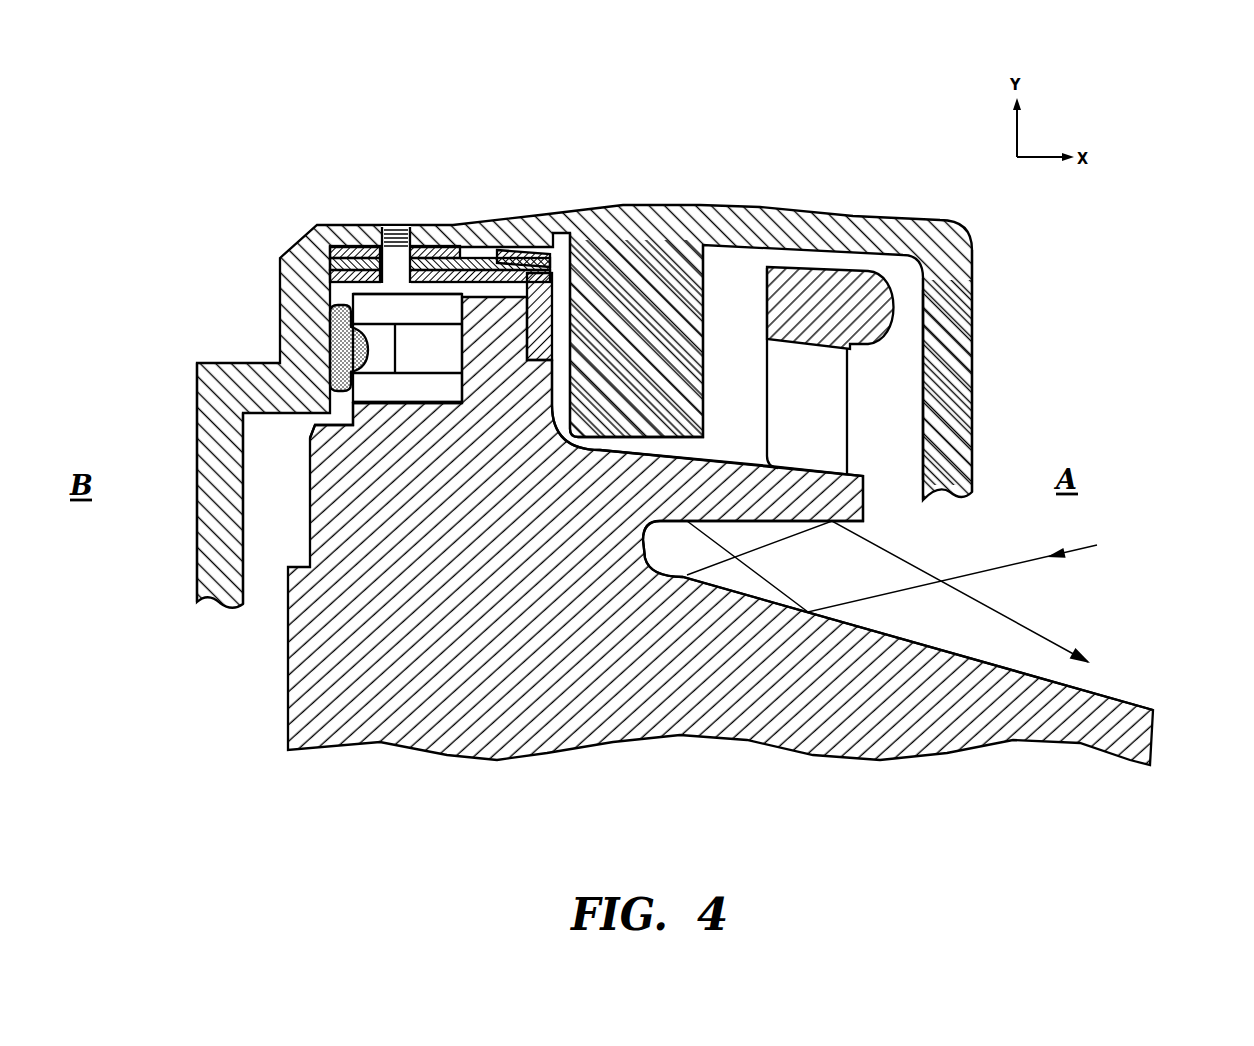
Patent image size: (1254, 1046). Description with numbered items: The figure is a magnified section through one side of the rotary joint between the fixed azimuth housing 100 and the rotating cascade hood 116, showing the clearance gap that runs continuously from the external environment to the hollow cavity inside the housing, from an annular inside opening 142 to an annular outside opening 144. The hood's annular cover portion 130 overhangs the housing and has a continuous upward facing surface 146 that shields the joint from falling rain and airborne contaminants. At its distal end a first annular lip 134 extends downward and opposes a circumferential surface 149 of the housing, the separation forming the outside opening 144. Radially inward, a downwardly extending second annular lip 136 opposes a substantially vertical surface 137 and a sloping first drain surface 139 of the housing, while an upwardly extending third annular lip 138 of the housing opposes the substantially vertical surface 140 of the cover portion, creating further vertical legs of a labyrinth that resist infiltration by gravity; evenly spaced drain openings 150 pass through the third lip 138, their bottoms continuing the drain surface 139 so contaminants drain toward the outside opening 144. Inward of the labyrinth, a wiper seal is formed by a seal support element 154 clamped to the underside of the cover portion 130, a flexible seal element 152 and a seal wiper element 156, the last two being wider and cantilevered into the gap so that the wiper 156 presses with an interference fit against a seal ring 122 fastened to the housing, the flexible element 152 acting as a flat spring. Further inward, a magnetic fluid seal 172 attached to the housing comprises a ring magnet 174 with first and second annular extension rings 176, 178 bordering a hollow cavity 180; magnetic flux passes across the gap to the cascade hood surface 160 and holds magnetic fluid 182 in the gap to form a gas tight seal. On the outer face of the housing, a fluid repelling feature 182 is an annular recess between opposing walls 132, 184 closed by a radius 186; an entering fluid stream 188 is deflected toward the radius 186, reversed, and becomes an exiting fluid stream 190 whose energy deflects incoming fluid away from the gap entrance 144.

The azimuth housing 100 is at (461, 724).
The cascade hood 116 is at (426, 229).
The seal ring 122 is at (547, 303).
The annular cover portion 130 is at (682, 182).
The wall 132 is at (1140, 699).
The first annular lip 134 is at (963, 322).
The second annular lip 136 is at (632, 400).
The substantially vertical surface 137 is at (553, 350).
The third annular lip 138 is at (893, 295).
The first drain surface 139 is at (730, 457).
The substantially vertical surface 140 is at (705, 303).
The inside opening 142 is at (263, 587).
The outside opening 144 is at (895, 488).
The upward facing surface 146 is at (877, 215).
The circumferential surface 149 is at (864, 501).
The drain opening 150 is at (829, 406).
The flexible seal element 152 is at (498, 262).
The seal support element 154 is at (432, 252).
The seal wiper element 156 is at (540, 268).
The cascade hood surface 160 is at (286, 327).
The fluid seal 172 is at (402, 420).
The ring magnet 174 is at (410, 330).
The first annular extension ring 176 is at (350, 300).
The second annular extension ring 178 is at (358, 383).
The hollow cavity 180 is at (383, 348).
The magnetic fluid 182 is at (338, 326).
The wall 184 is at (777, 522).
The radius 186 is at (644, 546).
The entering fluid stream 188 is at (914, 566).
The exiting fluid stream 190 is at (914, 602).